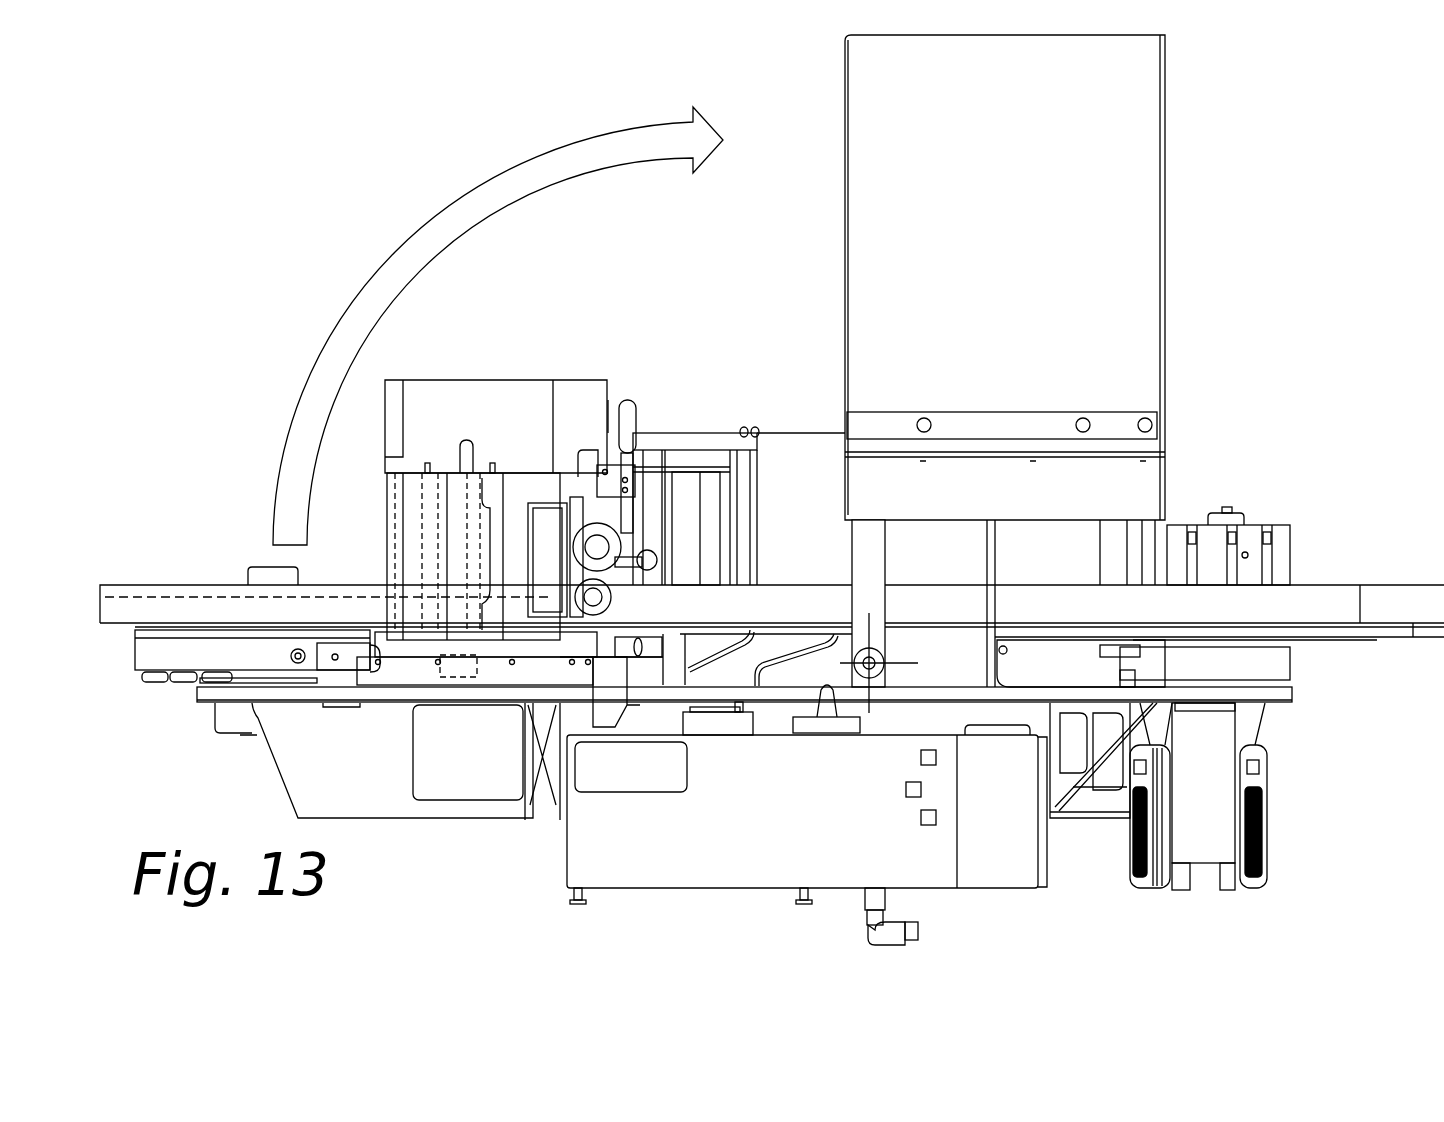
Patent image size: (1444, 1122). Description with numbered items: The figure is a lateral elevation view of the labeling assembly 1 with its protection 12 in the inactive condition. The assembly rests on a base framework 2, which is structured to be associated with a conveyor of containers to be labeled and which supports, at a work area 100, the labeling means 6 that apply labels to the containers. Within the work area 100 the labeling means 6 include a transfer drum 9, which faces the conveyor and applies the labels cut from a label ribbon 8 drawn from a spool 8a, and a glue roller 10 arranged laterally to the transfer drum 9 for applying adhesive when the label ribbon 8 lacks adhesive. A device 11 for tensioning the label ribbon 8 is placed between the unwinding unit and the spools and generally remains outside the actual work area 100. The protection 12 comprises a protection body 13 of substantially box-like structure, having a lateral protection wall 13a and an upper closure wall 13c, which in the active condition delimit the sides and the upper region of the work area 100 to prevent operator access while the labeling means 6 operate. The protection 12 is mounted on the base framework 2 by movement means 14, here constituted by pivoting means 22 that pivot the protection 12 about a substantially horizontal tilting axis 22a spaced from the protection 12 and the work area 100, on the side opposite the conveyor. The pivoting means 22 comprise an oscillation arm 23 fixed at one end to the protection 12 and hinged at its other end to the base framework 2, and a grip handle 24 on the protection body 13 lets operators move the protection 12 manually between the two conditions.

The labeling assembly 1 is at (306, 197).
The work area 100 is at (252, 512).
The base framework 2 is at (393, 790).
The labeling means 6 is at (187, 548).
The label ribbon 8 is at (955, 600).
The spool 8a is at (1317, 583).
The transfer drum 9 is at (142, 582).
The glue roller 10 is at (524, 455).
The device for tensioning the label ribbon 11 is at (768, 432).
The protection 12 is at (1211, 111).
The protection body 13 is at (1181, 182).
The lateral protection wall 13a is at (1125, 238).
The upper closure wall 13c is at (1170, 334).
The movement means 14 is at (845, 588).
The pivoting means 22 is at (840, 637).
The tilting axis 22a is at (849, 706).
The oscillation arm 23 is at (869, 547).
The grip handle 24 is at (1020, 412).